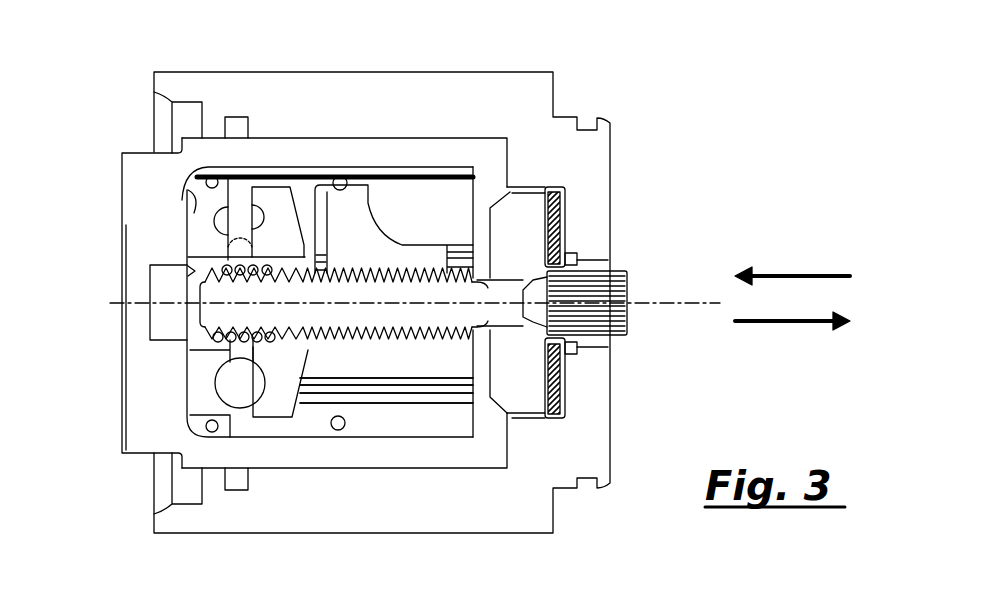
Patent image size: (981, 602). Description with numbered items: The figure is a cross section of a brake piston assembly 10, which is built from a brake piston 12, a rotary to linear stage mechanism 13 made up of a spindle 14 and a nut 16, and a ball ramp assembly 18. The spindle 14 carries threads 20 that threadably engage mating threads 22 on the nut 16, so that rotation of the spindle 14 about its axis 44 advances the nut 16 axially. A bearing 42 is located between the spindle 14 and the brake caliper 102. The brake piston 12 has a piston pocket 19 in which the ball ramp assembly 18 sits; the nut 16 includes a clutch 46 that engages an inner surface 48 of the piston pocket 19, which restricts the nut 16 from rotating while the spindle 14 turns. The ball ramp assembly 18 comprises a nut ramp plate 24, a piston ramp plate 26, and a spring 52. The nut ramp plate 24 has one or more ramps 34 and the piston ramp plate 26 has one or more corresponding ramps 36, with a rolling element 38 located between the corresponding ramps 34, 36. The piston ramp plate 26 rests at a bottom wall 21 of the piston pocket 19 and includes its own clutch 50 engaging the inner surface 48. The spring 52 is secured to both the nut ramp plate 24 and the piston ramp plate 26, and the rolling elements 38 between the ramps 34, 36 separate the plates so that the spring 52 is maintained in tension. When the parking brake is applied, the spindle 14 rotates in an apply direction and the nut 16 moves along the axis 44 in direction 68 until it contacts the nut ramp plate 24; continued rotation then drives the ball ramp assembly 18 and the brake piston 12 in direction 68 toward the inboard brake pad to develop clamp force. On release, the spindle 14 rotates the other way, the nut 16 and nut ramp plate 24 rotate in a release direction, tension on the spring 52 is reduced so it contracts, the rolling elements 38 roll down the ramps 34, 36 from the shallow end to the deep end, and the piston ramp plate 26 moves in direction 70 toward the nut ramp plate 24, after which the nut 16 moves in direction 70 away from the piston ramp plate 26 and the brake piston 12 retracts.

The brake piston assembly 10 is at (104, 52).
The brake piston 12 is at (446, 160).
The rotary to linear stage mechanism 13 is at (404, 238).
The spindle 14 is at (592, 290).
The nut 16 is at (418, 345).
The ball ramp assembly 18 is at (218, 442).
The piston pocket 19 is at (458, 345).
The threads 20 is at (344, 422).
The mating threads 22 is at (353, 340).
The bottom wall 21 is at (188, 190).
The nut ramp plate 24 is at (276, 398).
The piston ramp plate 26 is at (203, 375).
The ramps 34 is at (256, 227).
The corresponding ramps 36 is at (188, 218).
The rolling element 38 is at (228, 385).
The bearing 42 is at (563, 398).
The axis 44 is at (688, 308).
The clutch 46 is at (341, 177).
The inner surface 48 is at (303, 175).
The clutch 50 is at (212, 176).
The spring 52 is at (188, 337).
The direction 68 is at (792, 258).
The direction 70 is at (792, 335).
The brake caliper 102 is at (560, 157).